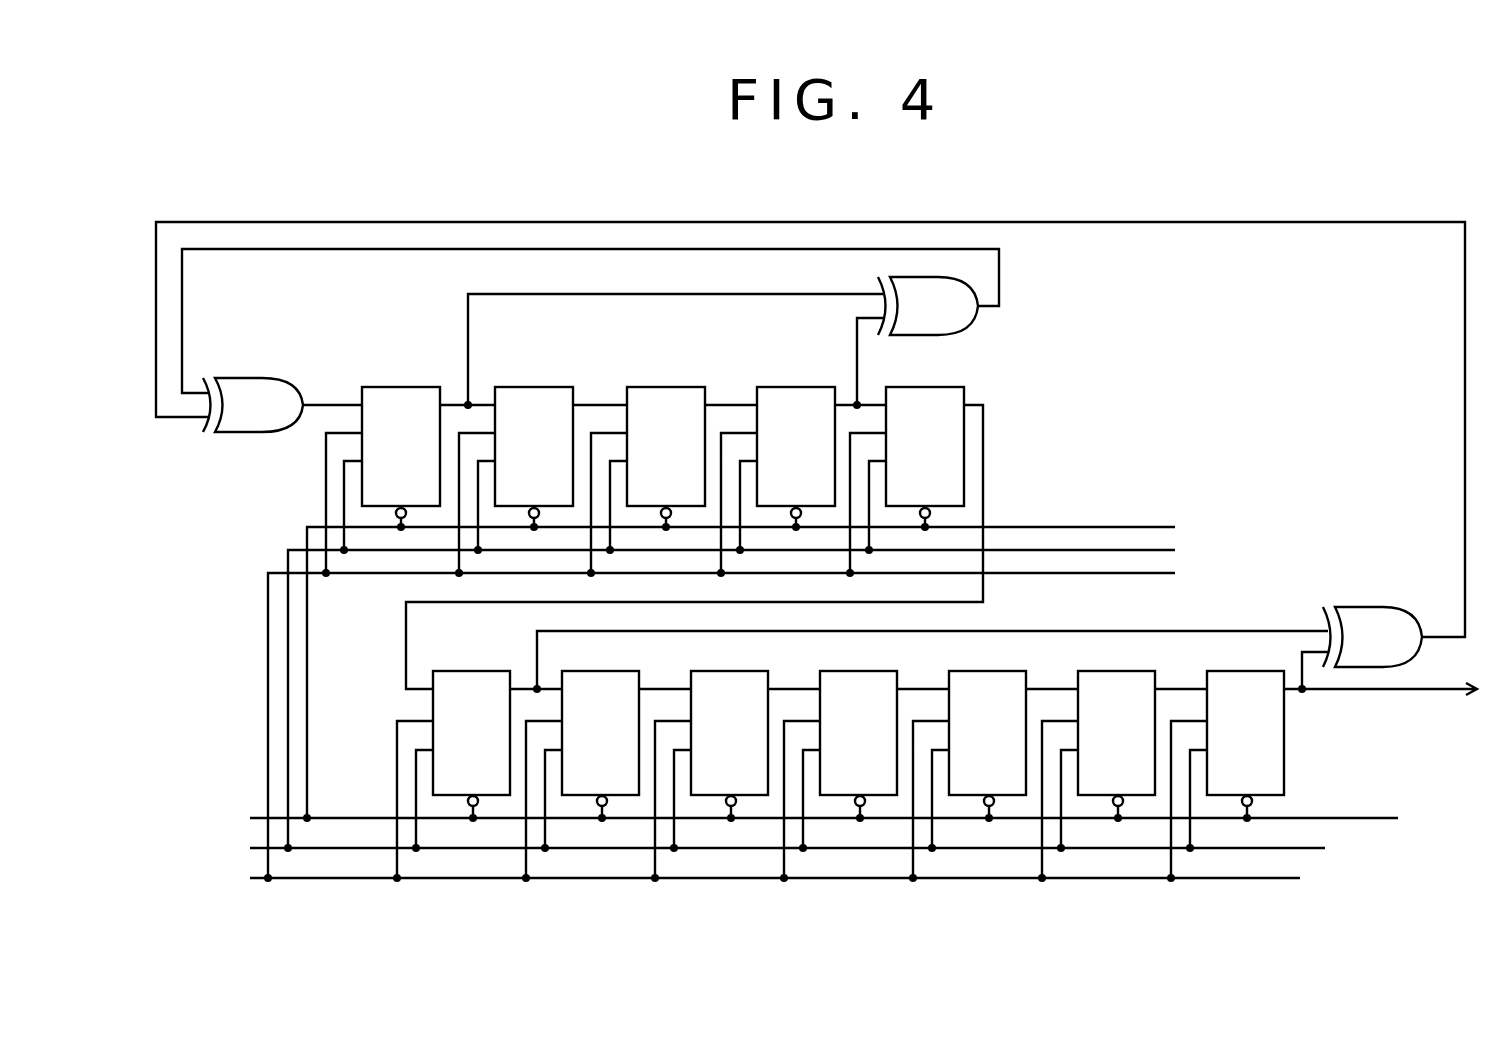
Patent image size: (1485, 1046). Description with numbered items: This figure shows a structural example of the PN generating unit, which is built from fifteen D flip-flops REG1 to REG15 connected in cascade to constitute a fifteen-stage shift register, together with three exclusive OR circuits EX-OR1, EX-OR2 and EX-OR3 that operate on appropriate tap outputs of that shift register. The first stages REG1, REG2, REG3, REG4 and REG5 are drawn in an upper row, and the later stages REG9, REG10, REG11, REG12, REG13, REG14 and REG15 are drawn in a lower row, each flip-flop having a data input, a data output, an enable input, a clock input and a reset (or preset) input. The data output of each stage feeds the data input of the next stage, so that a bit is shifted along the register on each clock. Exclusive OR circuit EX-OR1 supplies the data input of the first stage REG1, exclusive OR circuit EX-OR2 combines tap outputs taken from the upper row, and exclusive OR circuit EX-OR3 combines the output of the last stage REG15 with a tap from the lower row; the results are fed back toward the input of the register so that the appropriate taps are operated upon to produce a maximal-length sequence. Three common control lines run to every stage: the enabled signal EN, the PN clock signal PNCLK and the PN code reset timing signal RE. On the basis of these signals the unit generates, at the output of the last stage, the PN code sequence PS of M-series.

The exclusive OR circuit EX-OR1 is at (246, 379).
The exclusive OR circuit EX-OR2 is at (972, 319).
The exclusive OR circuit EX-OR3 is at (1362, 607).
The D flip-flop REG1 is at (384, 465).
The D flip-flop REG2 is at (517, 465).
The D flip-flop REG3 is at (649, 465).
The D flip-flop REG4 is at (779, 465).
The D flip-flop REG5 is at (908, 465).
The D flip-flop REG9 is at (452, 760).
The D flip-flop REG10 is at (586, 760).
The D flip-flop REG11 is at (715, 760).
The D flip-flop REG12 is at (844, 760).
The D flip-flop REG13 is at (973, 760).
The D flip-flop REG14 is at (1102, 760).
The D flip-flop REG15 is at (1231, 760).
The PN code reset timing signal RE is at (801, 680).
The PN clock signal PNCLK is at (736, 706).
The enabled signal EN is at (752, 733).
The PN code sequence PS is at (1380, 673).